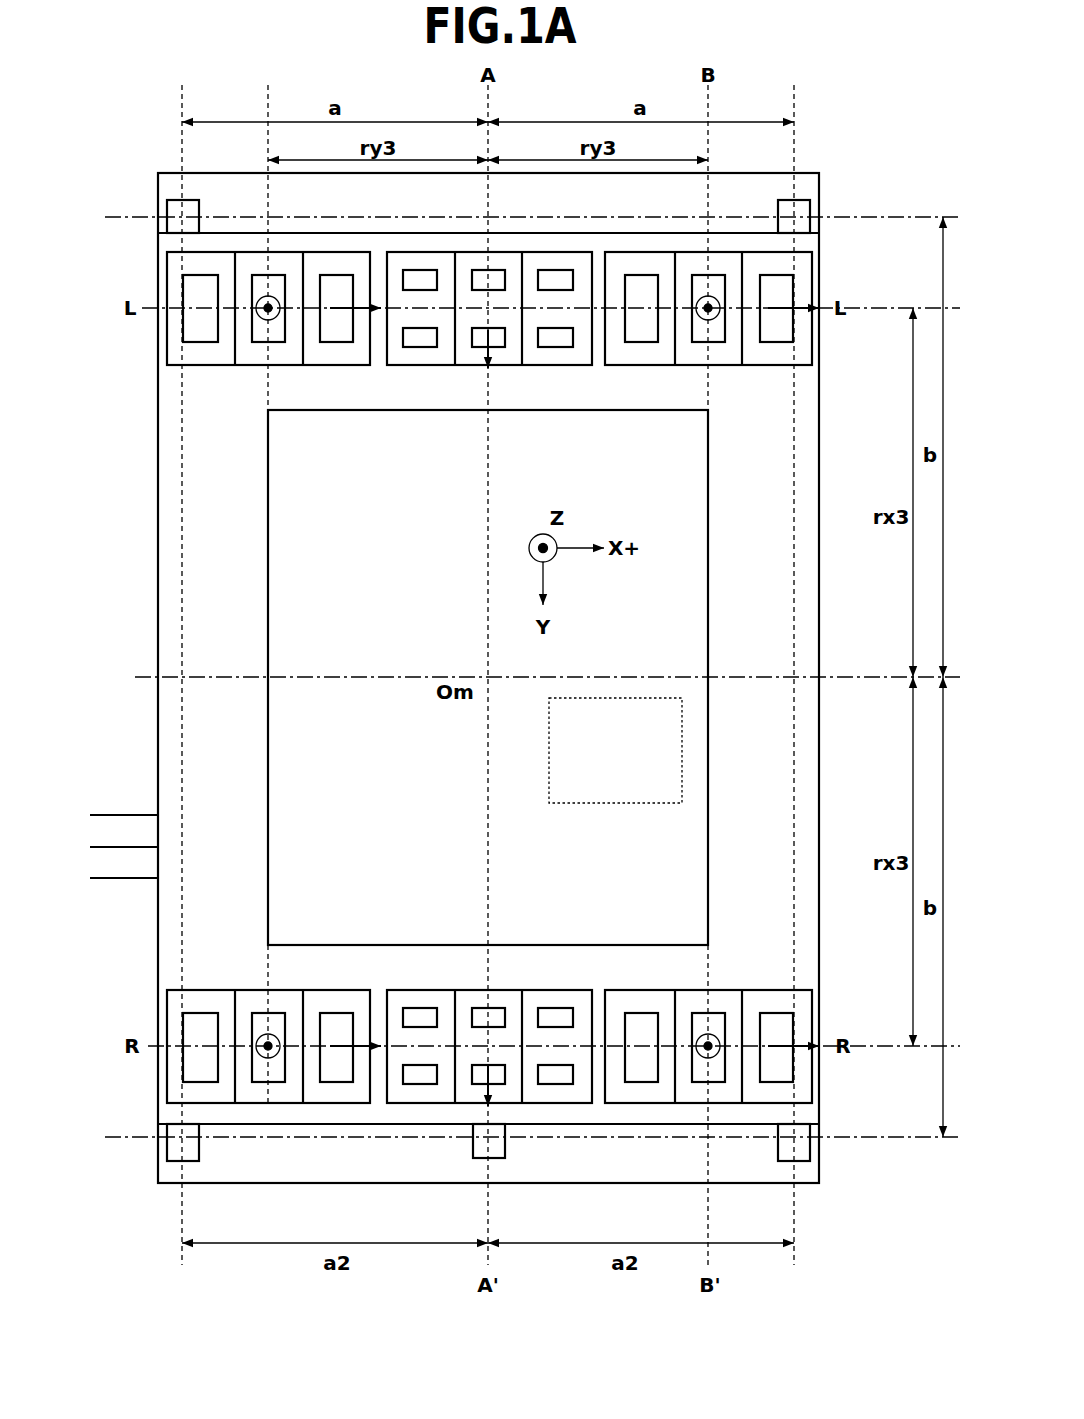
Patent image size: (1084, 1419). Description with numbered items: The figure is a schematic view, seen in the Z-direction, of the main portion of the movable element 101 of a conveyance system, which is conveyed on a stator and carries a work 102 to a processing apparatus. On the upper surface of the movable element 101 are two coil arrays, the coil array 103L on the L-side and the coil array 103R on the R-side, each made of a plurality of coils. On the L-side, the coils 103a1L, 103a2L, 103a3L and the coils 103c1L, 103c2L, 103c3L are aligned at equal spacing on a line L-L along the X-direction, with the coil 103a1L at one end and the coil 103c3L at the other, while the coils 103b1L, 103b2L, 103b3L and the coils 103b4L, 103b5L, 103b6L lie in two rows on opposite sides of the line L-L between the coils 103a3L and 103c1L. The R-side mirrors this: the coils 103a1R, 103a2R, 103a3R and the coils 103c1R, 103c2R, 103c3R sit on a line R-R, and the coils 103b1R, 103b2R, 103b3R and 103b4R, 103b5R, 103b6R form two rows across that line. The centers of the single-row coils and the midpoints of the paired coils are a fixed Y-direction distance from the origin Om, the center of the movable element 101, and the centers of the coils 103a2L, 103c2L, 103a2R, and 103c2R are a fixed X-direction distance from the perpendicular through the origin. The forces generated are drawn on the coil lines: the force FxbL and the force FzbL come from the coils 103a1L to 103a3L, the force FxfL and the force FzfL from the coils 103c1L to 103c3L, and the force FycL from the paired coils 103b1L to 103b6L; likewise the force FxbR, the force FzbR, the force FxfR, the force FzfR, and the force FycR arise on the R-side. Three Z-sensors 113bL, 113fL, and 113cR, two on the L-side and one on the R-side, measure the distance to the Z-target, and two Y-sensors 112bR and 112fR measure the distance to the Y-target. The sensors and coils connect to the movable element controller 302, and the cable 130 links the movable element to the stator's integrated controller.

The movable element 101 is at (158, 520).
The work 102 is at (268, 578).
The movable element controller 302 is at (620, 698).
The cable 130 is at (115, 868).
The Z-sensor 113bL is at (182, 198).
The Z-sensor 113fL is at (794, 198).
The Y-sensor 112bR is at (183, 1163).
The Z-sensor 113cR is at (488, 1160).
The Y-sensor 112fR is at (794, 1163).
The coil array 103L is at (123, 252).
The coil array 103R is at (123, 990).
The coil 103a1L is at (200, 344).
The coil 103a2L is at (268, 344).
The coil 103a3L is at (337, 344).
The coil 103b1L is at (420, 268).
The coil 103b2L is at (488, 268).
The coil 103b3L is at (555, 268).
The coil 103b4L is at (420, 349).
The coil 103b5L is at (500, 349).
The coil 103b6L is at (556, 349).
The coil 103c1L is at (640, 344).
The coil 103c2L is at (708, 344).
The coil 103c3L is at (778, 344).
The coil 103a1R is at (200, 1084).
The coil 103a2R is at (268, 1084).
The coil 103a3R is at (337, 1084).
The coil 103b1R is at (420, 1086).
The coil 103b2R is at (488, 1086).
The coil 103b3R is at (556, 1086).
The coil 103b4R is at (420, 1006).
The coil 103b5R is at (500, 1006).
The coil 103b6R is at (556, 1006).
The coil 103c1R is at (640, 1084).
The coil 103c2R is at (709, 1084).
The coil 103c3R is at (778, 1084).
The force in the Z-direction FzbL is at (267, 296).
The force in the Z-direction FzfL is at (710, 296).
The force in the X-direction FxbL is at (337, 312).
The force in the X-direction FxfL is at (790, 305).
The force in the Y-direction FycL is at (486, 364).
The force in the Z-direction FzbR is at (267, 1034).
The force in the Z-direction FzfR is at (709, 1034).
The force in the X-direction FxbR is at (337, 1044).
The force in the X-direction FxfR is at (750, 1044).
The force in the Y-direction FycR is at (486, 1094).